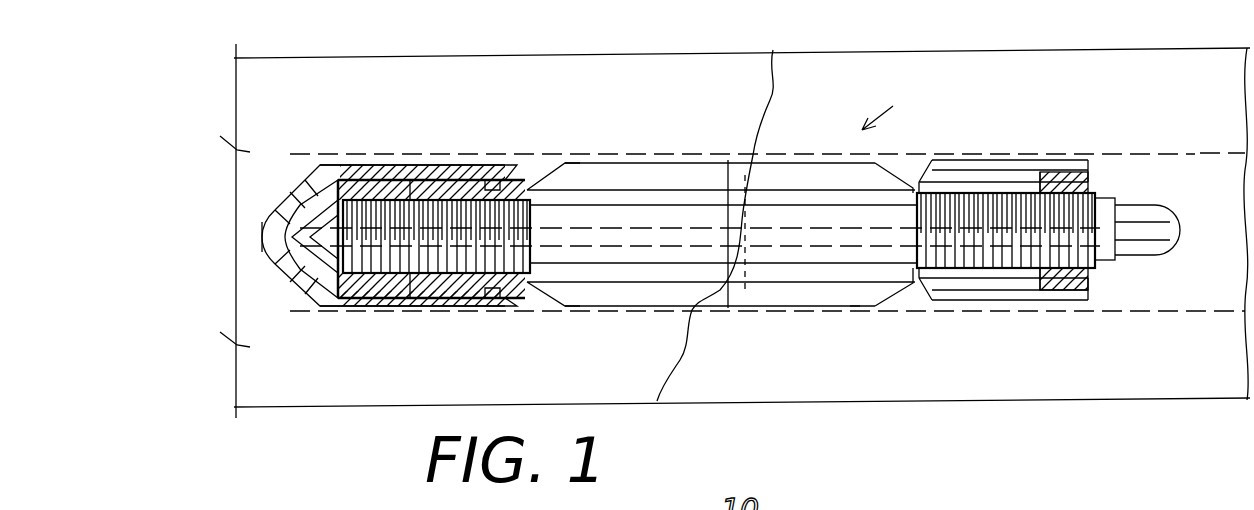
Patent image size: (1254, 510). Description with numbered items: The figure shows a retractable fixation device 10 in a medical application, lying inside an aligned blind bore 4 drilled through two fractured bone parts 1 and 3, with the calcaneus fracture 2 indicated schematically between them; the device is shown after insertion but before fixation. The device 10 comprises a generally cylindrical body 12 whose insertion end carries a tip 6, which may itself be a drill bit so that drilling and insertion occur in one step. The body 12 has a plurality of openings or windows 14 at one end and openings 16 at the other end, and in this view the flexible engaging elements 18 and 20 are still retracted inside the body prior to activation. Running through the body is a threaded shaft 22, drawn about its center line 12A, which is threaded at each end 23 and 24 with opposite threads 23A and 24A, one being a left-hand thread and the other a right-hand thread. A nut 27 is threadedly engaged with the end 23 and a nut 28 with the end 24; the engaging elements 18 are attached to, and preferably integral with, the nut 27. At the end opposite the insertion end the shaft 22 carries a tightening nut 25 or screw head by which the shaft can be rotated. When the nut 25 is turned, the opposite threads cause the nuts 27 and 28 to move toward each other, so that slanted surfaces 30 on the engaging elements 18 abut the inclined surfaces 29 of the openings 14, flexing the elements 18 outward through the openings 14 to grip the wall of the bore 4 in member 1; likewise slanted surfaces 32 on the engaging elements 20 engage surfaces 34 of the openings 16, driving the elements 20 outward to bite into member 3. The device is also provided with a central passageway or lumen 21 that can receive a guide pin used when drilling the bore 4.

The bone part 1 is at (872, 56).
The calcaneus fracture 2 is at (773, 52).
The bone part 3 is at (662, 57).
The blind bore 4 is at (1216, 152).
The tip 6 is at (292, 235).
The fixation device 10 is at (897, 104).
The cylindrical body 12 is at (640, 180).
The center line of shaft 12A is at (728, 156).
The openings 14 is at (542, 308).
The openings 16 is at (888, 306).
The flexible engaging elements 18 is at (456, 292).
The flexible engaging elements 20 is at (978, 292).
The central passageway 21 is at (306, 274).
The threaded shaft 22 is at (760, 205).
The shaft end 23 is at (318, 300).
The thread 23A is at (430, 285).
The shaft end 24 is at (1072, 256).
The thread 24A is at (1058, 180).
The tightening nut 25 is at (1138, 216).
The nut 27 is at (370, 182).
The nut 28 is at (1080, 170).
The inclined surfaces 29 is at (568, 312).
The slanted surfaces 30 is at (528, 300).
The slanted surfaces 32 is at (908, 300).
The surfaces 34 is at (858, 308).